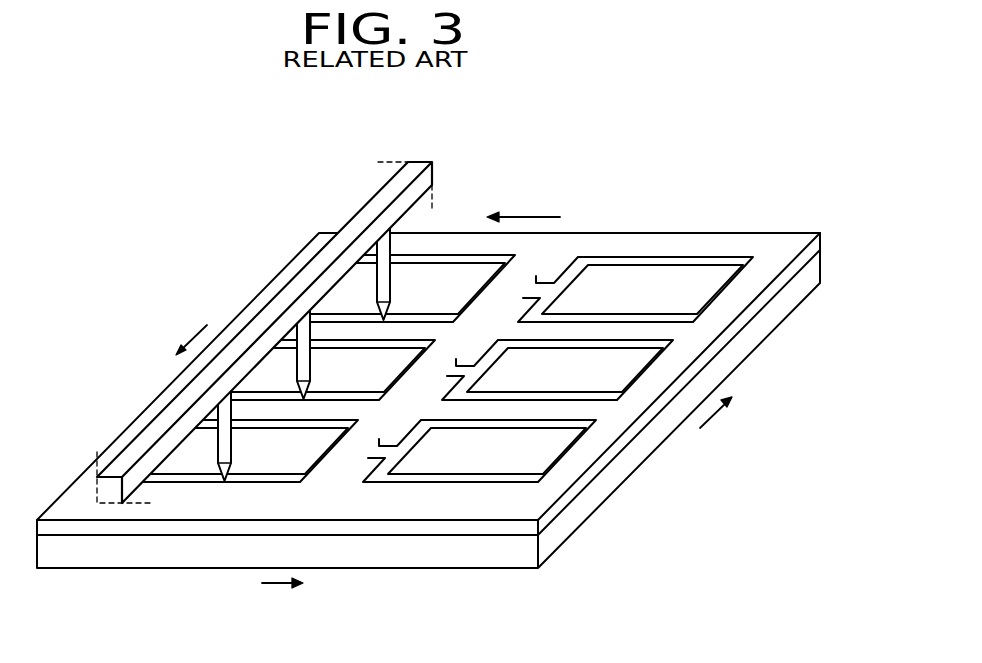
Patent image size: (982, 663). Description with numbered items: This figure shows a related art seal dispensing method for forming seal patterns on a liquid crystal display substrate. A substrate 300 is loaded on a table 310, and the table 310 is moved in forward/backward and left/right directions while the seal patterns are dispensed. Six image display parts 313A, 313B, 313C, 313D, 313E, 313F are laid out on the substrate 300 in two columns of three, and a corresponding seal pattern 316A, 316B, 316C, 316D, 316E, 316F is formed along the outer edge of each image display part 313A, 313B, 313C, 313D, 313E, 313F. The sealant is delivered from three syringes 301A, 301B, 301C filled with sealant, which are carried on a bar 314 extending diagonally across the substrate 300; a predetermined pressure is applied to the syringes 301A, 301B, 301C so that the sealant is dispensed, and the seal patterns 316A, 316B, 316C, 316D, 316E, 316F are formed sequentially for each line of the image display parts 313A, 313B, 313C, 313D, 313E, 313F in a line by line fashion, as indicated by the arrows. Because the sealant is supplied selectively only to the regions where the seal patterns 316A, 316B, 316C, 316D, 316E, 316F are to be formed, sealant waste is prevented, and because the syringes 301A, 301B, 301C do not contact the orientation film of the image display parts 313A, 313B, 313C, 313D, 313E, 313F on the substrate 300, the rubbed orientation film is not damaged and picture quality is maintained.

The substrate 300 is at (389, 524).
The table 310 is at (483, 557).
The rail 314 is at (373, 207).
The syringe 301A is at (378, 277).
The syringe 301B is at (298, 328).
The syringe 301C is at (222, 437).
The image display part 313A is at (614, 300).
The image display part 313B is at (535, 379).
The image display part 313C is at (456, 460).
The image display part 313D is at (399, 299).
The image display part 313E is at (320, 379).
The image display part 313F is at (245, 460).
The seal pattern 316A is at (730, 287).
The seal pattern 316B is at (652, 363).
The seal pattern 316C is at (563, 449).
The seal pattern 316D is at (455, 256).
The seal pattern 316E is at (440, 340).
The seal pattern 316F is at (268, 484).